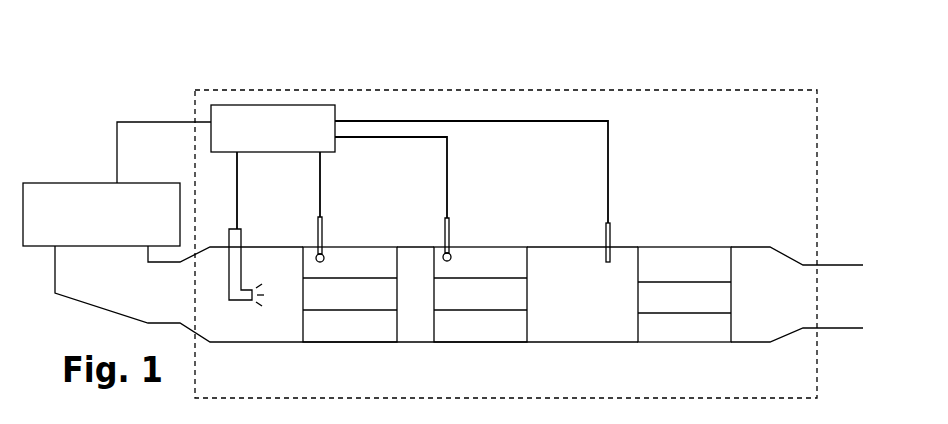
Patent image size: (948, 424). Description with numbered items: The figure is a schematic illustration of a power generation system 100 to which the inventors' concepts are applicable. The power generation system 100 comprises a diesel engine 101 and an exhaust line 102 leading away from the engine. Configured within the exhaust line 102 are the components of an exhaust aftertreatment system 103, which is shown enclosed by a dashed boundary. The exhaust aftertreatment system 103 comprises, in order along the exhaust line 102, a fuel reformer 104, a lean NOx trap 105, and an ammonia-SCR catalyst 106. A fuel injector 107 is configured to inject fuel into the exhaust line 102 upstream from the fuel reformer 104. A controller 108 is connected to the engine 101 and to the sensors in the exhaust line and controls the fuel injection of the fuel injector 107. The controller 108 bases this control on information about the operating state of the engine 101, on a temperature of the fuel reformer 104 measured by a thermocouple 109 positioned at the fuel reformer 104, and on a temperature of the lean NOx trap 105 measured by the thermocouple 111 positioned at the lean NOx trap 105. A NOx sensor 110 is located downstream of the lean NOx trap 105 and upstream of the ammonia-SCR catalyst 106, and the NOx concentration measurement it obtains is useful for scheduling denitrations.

The power generation system 100 is at (157, 94).
The diesel engine 101 is at (93, 183).
The exhaust line 102 is at (268, 343).
The exhaust aftertreatment system 103 is at (730, 90).
The fuel reformer 104 is at (357, 247).
The lean NOx trap 105 is at (485, 247).
The ammonia-SCR catalyst 106 is at (685, 247).
The fuel injector 107 is at (232, 229).
The controller 108 is at (296, 105).
The thermocouple 109 is at (322, 228).
The NOx sensor 110 is at (612, 228).
The thermocouple 111 is at (452, 228).